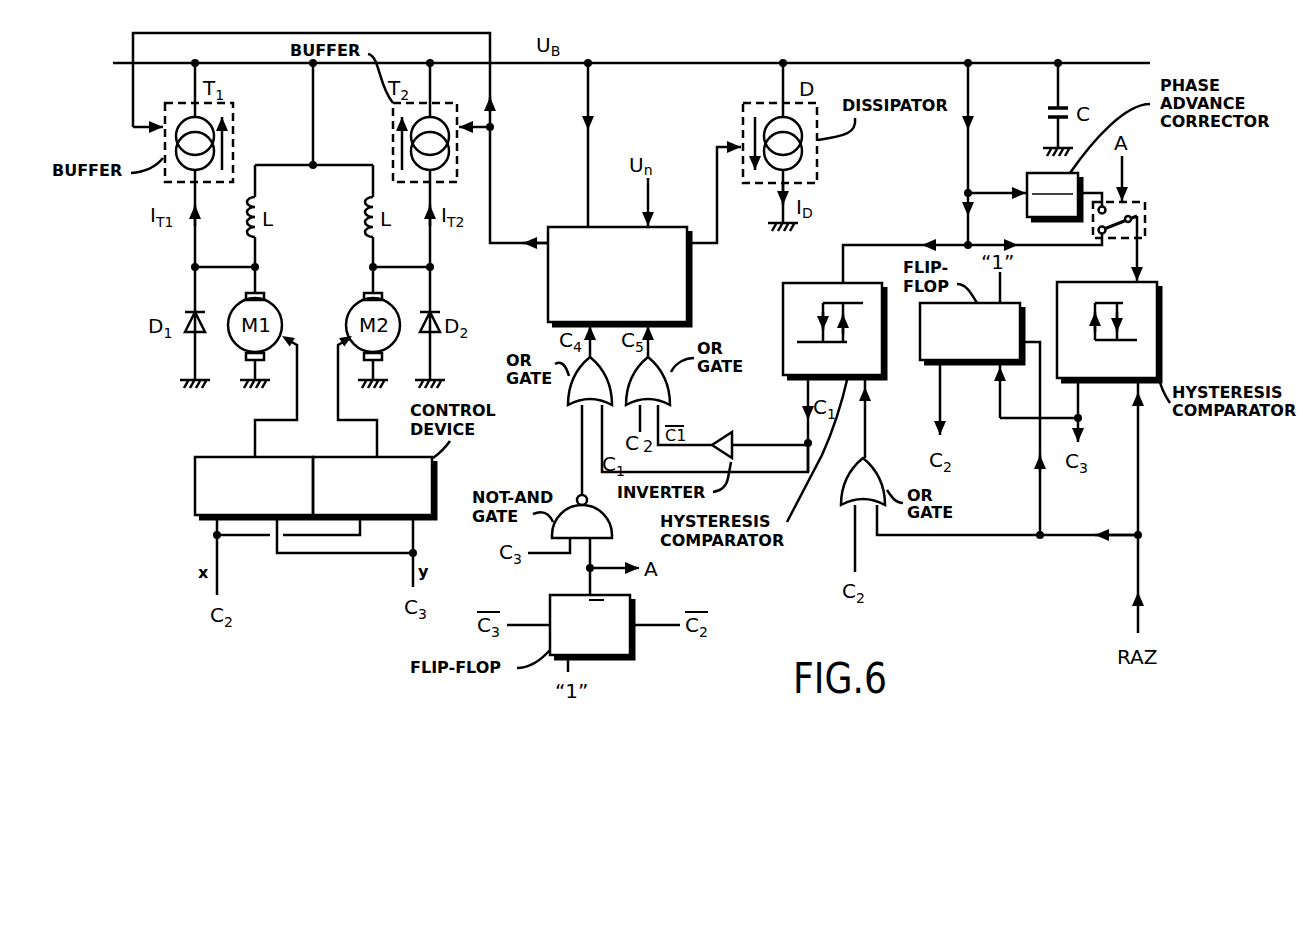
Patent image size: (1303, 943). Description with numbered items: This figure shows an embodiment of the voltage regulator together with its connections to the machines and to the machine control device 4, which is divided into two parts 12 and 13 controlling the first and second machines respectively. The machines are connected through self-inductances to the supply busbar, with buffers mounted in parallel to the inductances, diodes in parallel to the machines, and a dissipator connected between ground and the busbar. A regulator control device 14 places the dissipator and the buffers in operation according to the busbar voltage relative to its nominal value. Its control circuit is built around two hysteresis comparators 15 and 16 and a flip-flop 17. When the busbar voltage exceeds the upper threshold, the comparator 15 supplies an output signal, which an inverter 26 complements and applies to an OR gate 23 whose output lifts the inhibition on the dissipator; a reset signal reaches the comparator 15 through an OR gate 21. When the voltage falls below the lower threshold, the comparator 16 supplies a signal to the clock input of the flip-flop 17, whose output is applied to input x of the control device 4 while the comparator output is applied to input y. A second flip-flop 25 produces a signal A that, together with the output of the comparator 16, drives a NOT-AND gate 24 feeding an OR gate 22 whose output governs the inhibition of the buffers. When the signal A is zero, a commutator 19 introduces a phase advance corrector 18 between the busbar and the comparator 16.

The machine control device 4 is at (332, 487).
The first part of the control device 12 is at (254, 486).
The second part of the control device 13 is at (372, 486).
The regulator control device 14 is at (619, 276).
The hysteresis comparator 15 is at (834, 330).
The hysteresis comparator 16 is at (1108, 331).
The flip-flop 17 is at (971, 333).
The phase advance corrector 18 is at (1027, 208).
The commutator 19 is at (1148, 213).
The OR gate 21 is at (863, 481).
The OR gate 22 is at (590, 381).
The OR gate 23 is at (648, 381).
The NOT-AND gate 24 is at (582, 516).
The flip-flop 25 is at (591, 626).
The inverter 26 is at (722, 439).